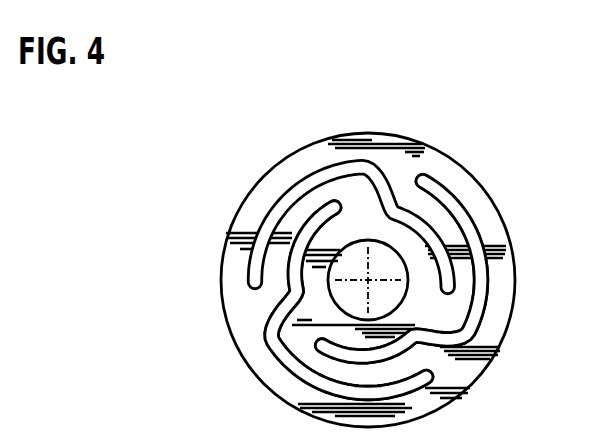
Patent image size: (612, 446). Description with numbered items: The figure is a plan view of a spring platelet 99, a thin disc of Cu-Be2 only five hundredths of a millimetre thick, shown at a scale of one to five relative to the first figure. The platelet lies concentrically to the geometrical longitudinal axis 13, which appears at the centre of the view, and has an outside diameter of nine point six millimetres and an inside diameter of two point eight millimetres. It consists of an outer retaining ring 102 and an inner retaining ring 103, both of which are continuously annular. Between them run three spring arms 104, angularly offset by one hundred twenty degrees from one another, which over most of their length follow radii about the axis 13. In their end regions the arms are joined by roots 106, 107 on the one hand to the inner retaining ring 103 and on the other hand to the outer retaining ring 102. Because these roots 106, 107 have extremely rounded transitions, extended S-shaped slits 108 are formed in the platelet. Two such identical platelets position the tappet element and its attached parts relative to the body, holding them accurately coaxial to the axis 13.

The spring platelet 99 is at (437, 155).
The outer retaining ring 102 is at (490, 218).
The spring arms 104 is at (287, 218).
The root 106 is at (358, 197).
The root 107 is at (253, 316).
The inner retaining ring 103 is at (314, 327).
The S-shaped slits 108 is at (484, 271).
The geometrical longitudinal axis 13 is at (373, 284).